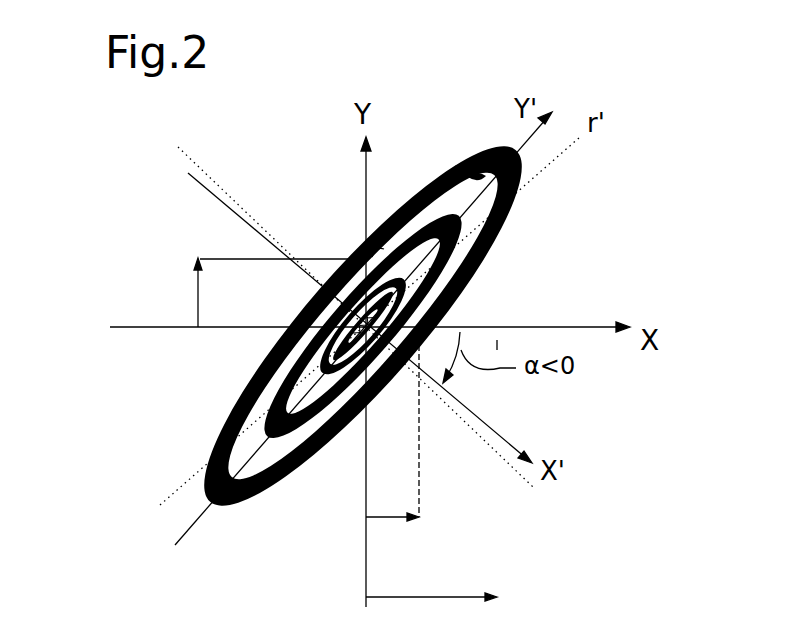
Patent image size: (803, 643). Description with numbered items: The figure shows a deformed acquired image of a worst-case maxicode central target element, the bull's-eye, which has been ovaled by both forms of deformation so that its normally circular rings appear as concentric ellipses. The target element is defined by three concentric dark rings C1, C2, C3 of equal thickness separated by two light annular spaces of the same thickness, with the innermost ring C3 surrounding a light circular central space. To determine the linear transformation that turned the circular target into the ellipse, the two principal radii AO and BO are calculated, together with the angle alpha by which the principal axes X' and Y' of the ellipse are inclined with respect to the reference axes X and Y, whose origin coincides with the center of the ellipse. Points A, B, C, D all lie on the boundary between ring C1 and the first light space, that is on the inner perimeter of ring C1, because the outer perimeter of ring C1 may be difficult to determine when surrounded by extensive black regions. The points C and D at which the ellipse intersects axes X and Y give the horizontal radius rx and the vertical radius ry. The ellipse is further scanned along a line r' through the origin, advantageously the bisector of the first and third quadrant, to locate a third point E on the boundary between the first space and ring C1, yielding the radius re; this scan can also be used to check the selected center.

The outer ring C1 is at (505, 212).
The middle ring C2 is at (460, 243).
The innermost ring C3 is at (440, 290).
The point A is at (415, 352).
The point B is at (460, 168).
The point C is at (441, 316).
The point D is at (382, 235).
The third point E is at (487, 207).
The vertical radius ry is at (255, 292).
The horizontal radius rx is at (392, 433).
The radius along line r' re is at (431, 616).